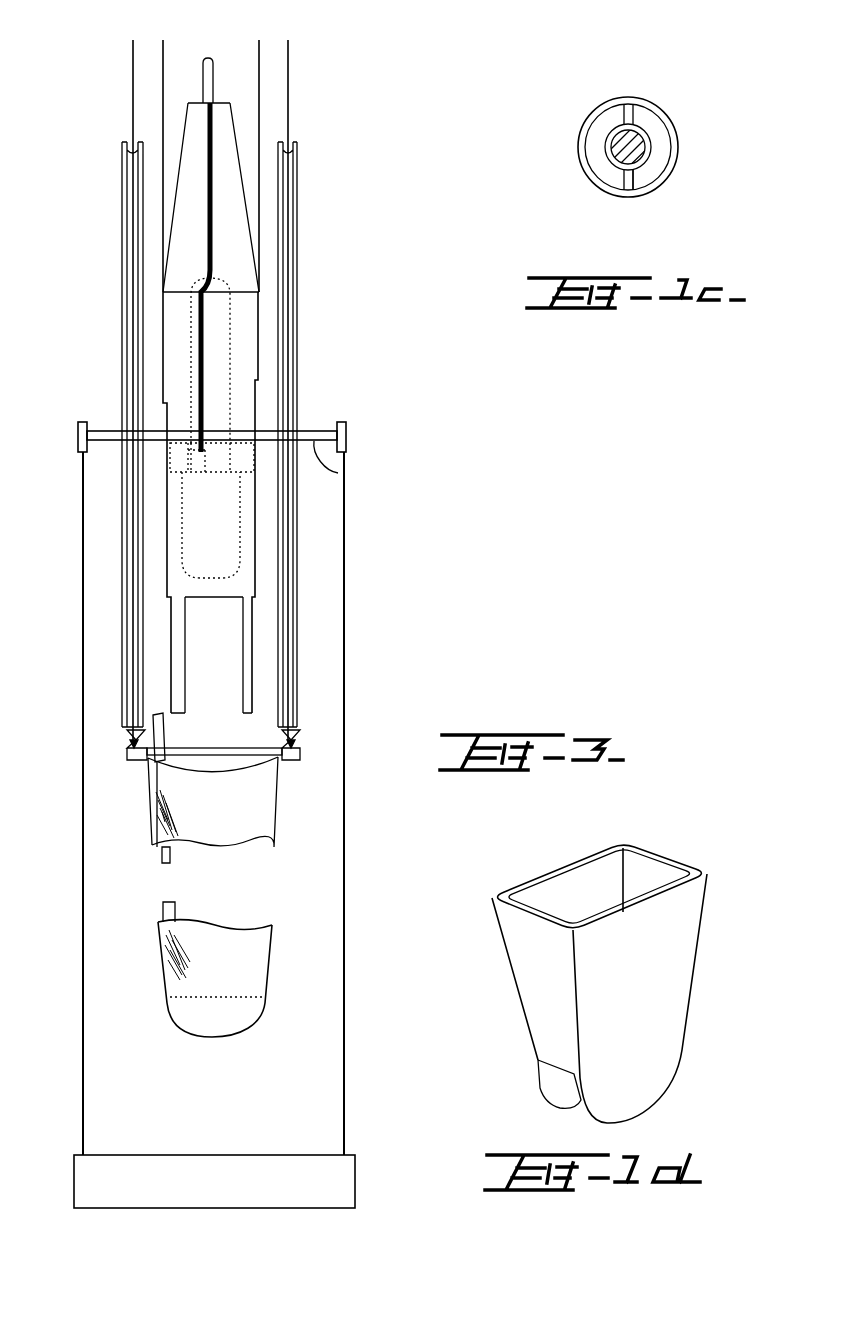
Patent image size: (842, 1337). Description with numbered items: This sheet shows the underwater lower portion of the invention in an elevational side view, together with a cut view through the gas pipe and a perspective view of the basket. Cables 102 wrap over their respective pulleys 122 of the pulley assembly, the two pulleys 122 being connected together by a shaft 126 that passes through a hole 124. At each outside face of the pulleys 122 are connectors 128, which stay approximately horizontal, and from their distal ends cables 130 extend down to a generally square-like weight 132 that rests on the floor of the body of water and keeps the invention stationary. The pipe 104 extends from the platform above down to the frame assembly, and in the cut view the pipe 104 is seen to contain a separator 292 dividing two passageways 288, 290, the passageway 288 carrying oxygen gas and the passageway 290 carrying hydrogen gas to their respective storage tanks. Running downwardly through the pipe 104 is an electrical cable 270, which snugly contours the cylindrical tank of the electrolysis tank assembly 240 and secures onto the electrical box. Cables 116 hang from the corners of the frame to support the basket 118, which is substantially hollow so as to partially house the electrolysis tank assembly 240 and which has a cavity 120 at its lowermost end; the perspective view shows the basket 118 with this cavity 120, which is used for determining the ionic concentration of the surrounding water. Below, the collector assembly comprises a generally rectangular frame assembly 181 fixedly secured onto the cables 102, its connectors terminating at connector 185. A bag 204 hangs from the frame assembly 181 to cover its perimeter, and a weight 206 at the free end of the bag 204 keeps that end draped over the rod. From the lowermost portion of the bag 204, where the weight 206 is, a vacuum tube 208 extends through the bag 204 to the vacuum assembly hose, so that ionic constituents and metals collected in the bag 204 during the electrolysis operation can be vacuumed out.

In FIG. 3, the cable 102 is at (133, 80).
In FIG. 3, the pipe 104 is at (214, 66).
In FIG. 1c, the pipe 104 is at (679, 148).
In FIG. 3, the cable 116 is at (259, 85).
In FIG. 3, the basket 118 is at (259, 327).
In FIG. 1d, the basket 118 is at (661, 1001).
In FIG. 3, the cavity 120 is at (216, 652).
In FIG. 1d, the cavity 120 is at (555, 1083).
In FIG. 3, the pulley 122 is at (300, 376).
In FIG. 3, the hole 124 is at (300, 428).
In FIG. 3, the shaft 126 is at (338, 473).
In FIG. 3, the connector 128 is at (346, 437).
In FIG. 3, the cable 130 is at (345, 549).
In FIG. 3, the weight 132 is at (229, 1198).
In FIG. 3, the frame assembly 181 is at (292, 758).
In FIG. 3, the connector 185 is at (203, 752).
In FIG. 3, the bag 204 is at (250, 978).
In FIG. 3, the weight 206 is at (240, 1025).
In FIG. 3, the vacuum tube 208 is at (160, 855).
In FIG. 3, the electrolysis tank assembly 240 is at (228, 309).
In FIG. 3, the electrical cable 270 is at (208, 198).
In FIG. 1c, the electrical cable 270 is at (614, 137).
In FIG. 1c, the passageway 288 is at (647, 175).
In FIG. 1c, the passageway 290 is at (608, 175).
In FIG. 1c, the separator 292 is at (634, 110).